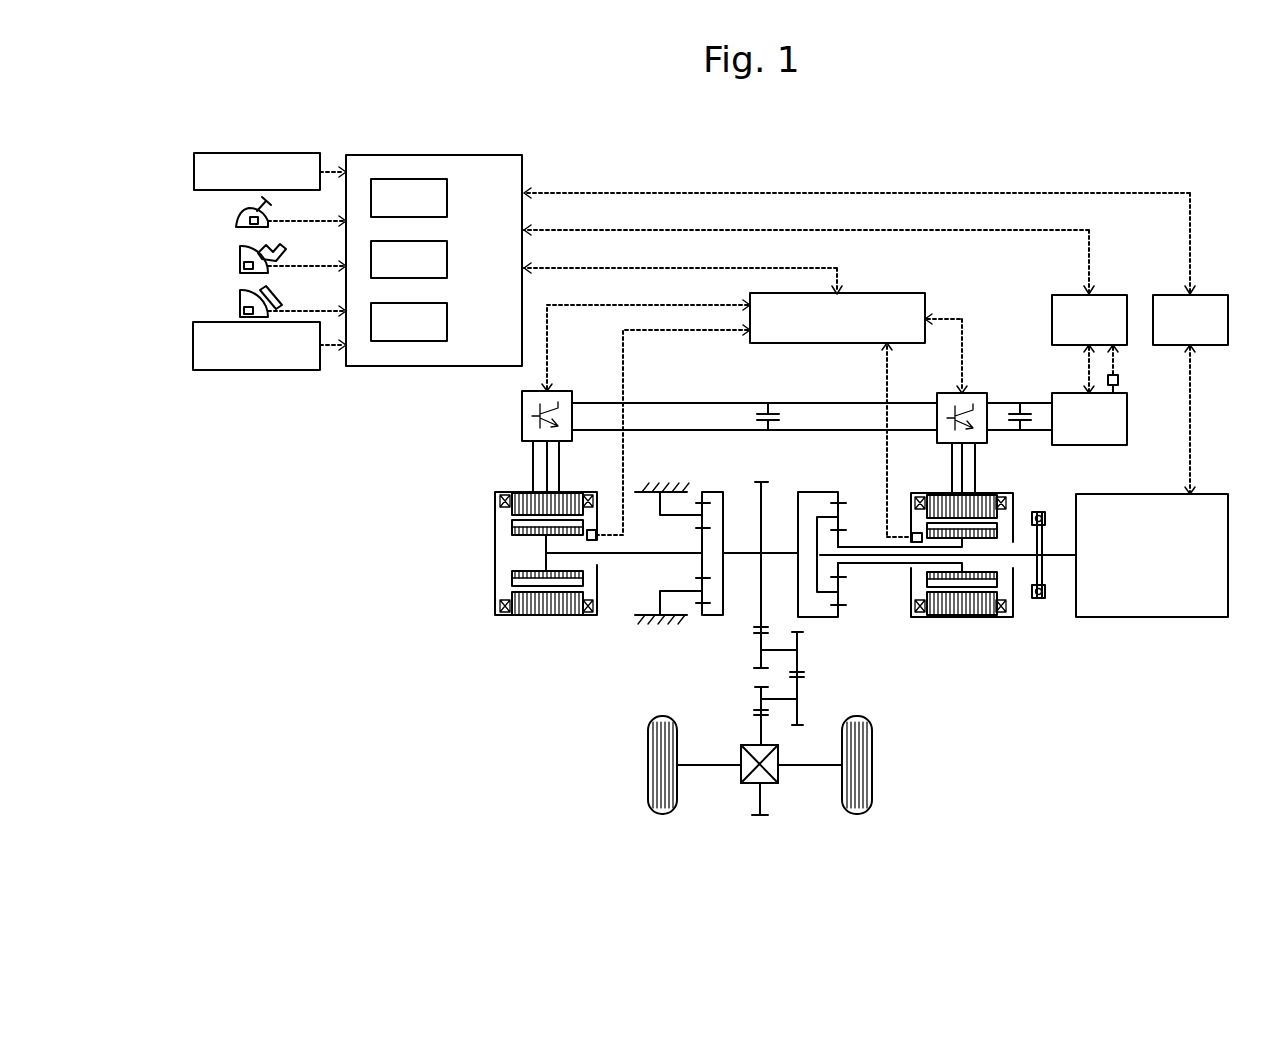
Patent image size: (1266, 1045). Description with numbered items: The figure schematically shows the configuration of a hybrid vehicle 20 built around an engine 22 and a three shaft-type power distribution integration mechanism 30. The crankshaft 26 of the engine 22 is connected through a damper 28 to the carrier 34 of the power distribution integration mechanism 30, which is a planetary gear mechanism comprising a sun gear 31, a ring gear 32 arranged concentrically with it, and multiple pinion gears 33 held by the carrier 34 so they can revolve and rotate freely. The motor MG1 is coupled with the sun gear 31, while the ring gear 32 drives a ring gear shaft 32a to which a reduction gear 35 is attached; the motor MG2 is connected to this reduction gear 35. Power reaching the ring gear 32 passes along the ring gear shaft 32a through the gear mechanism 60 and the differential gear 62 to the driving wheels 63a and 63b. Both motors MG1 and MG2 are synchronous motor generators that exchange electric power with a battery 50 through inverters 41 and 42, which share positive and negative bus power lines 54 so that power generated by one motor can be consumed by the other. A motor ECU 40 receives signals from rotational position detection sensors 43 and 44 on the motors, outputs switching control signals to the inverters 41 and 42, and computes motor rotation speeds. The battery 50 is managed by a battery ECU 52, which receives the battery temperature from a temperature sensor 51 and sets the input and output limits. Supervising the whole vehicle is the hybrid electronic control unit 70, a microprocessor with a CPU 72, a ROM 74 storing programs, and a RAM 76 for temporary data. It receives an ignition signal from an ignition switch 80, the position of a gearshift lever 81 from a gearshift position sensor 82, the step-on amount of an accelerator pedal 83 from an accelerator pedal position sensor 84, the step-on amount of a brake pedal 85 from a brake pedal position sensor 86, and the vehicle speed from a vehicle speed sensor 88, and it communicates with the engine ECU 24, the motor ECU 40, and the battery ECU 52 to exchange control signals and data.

The hybrid vehicle 20 is at (1027, 122).
The engine 22 is at (1150, 618).
The engine ECU 24 is at (1219, 294).
The crankshaft 26 is at (1062, 557).
The damper 28 is at (1040, 600).
The power distribution integration mechanism 30 is at (880, 534).
The sun gear 31 is at (845, 568).
The ring gear 32 is at (845, 612).
The ring gear shaft 32a is at (779, 550).
The pinion gears 33 is at (845, 590).
The carrier 34 is at (820, 520).
The reduction gear 35 is at (708, 478).
The motor ECU 40 is at (873, 292).
The inverter 41 is at (968, 392).
The inverter 42 is at (563, 390).
The rotational position detection sensor 43 is at (913, 532).
The rotational position detection sensor 44 is at (595, 528).
The battery 50 is at (1088, 446).
The temperature sensor 51 is at (1119, 380).
The battery ECU 52 is at (1116, 294).
The power lines 54 is at (826, 430).
The gear mechanism 60 is at (817, 684).
The differential gear 62 is at (780, 773).
The driving wheel 63a is at (648, 765).
The driving wheel 63b is at (872, 765).
The hybrid electronic control unit 70 is at (434, 154).
The CPU 72 is at (449, 199).
The ROM 74 is at (449, 261).
The RAM 76 is at (449, 323).
The ignition switch 80 is at (192, 170).
The gearshift lever 81 is at (261, 207).
The gearshift position sensor 82 is at (238, 222).
The accelerator pedal 83 is at (243, 248).
The accelerator pedal position sensor 84 is at (240, 268).
The brake pedal 85 is at (243, 293).
The brake pedal position sensor 86 is at (240, 312).
The vehicle speed sensor 88 is at (192, 344).
The motor MG1 is at (960, 618).
The motor MG2 is at (546, 617).